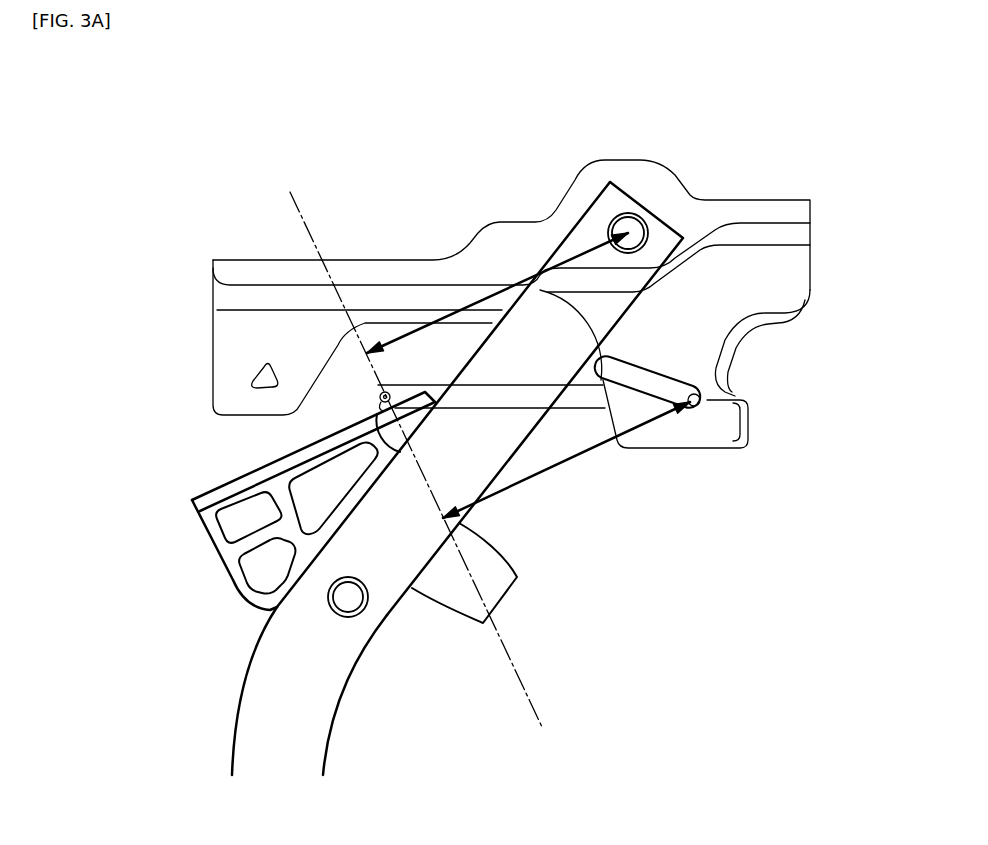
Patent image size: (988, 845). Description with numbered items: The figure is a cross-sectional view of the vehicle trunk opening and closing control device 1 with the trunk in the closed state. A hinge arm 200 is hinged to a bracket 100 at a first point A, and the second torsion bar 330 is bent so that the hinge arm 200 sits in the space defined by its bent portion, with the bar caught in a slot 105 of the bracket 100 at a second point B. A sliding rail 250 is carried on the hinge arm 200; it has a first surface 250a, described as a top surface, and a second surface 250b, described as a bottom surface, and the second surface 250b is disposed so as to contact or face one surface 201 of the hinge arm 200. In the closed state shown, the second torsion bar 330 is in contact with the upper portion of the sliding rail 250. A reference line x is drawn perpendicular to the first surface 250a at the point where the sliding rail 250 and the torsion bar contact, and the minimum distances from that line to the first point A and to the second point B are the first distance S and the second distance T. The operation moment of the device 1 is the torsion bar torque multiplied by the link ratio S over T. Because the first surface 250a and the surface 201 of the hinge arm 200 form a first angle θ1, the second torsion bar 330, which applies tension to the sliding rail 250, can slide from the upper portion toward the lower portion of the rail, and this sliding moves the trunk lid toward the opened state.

The vehicle trunk opening and closing control device 1 is at (544, 87).
The bracket 100 is at (738, 198).
The slot 105 is at (728, 388).
The hinge arm 200 is at (388, 627).
The surface of hinge arm 201 is at (255, 643).
The sliding rail 250 is at (207, 540).
The first surface 250a is at (230, 482).
The second surface 250b is at (307, 560).
The second torsion bar 330 is at (577, 413).